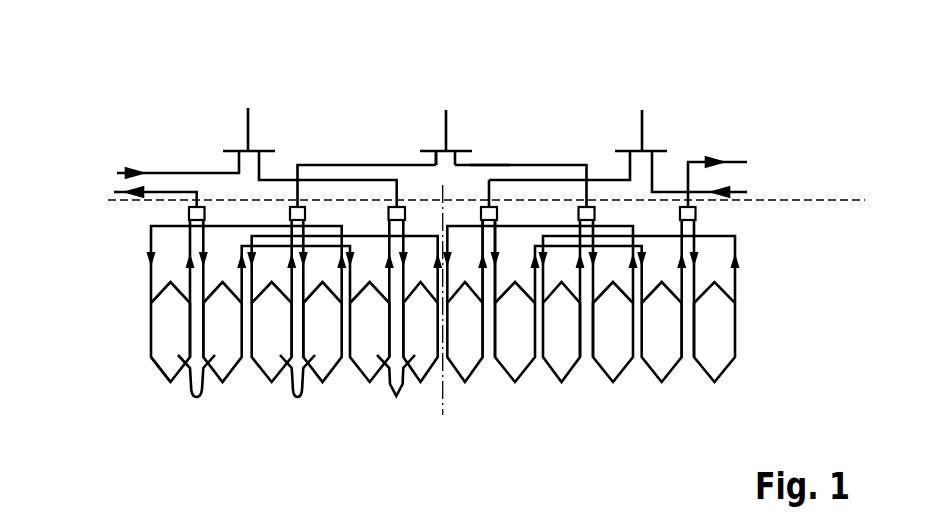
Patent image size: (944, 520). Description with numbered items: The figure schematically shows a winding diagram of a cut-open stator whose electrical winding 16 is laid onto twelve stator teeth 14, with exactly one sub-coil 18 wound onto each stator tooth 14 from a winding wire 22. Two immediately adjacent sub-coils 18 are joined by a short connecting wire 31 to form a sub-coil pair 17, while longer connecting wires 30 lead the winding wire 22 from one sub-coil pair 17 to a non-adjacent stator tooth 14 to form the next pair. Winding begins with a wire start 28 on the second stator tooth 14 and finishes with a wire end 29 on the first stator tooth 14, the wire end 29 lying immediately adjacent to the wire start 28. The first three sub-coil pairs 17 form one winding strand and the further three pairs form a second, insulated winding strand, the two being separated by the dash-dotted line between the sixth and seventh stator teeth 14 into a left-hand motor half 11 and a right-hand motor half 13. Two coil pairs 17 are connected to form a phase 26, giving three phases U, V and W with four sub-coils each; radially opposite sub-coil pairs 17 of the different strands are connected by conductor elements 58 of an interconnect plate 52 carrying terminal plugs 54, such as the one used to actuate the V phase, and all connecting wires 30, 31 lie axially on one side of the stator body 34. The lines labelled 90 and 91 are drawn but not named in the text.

The left-hand motor half 11 is at (441, 376).
The right-hand motor half 13 is at (441, 376).
The stator tooth 14 is at (396, 396).
The electrical winding 16 is at (112, 324).
The winding wire 22 is at (148, 283).
The sub-coil pair 17 is at (196, 397).
The sub-coil 18 is at (165, 362).
The phase 26 is at (248, 83).
The wire start 28 is at (498, 216).
The wire end 29 is at (481, 216).
The connecting wire 30 is at (152, 226).
The short connecting wire 31 is at (195, 206).
The stator body 34 is at (760, 298).
The interconnect plate 52 is at (770, 176).
The terminal plug 54 is at (443, 132).
The conductor element 58 is at (490, 146).
The connecting line 90 is at (376, 163).
The connecting line 91 is at (543, 162).